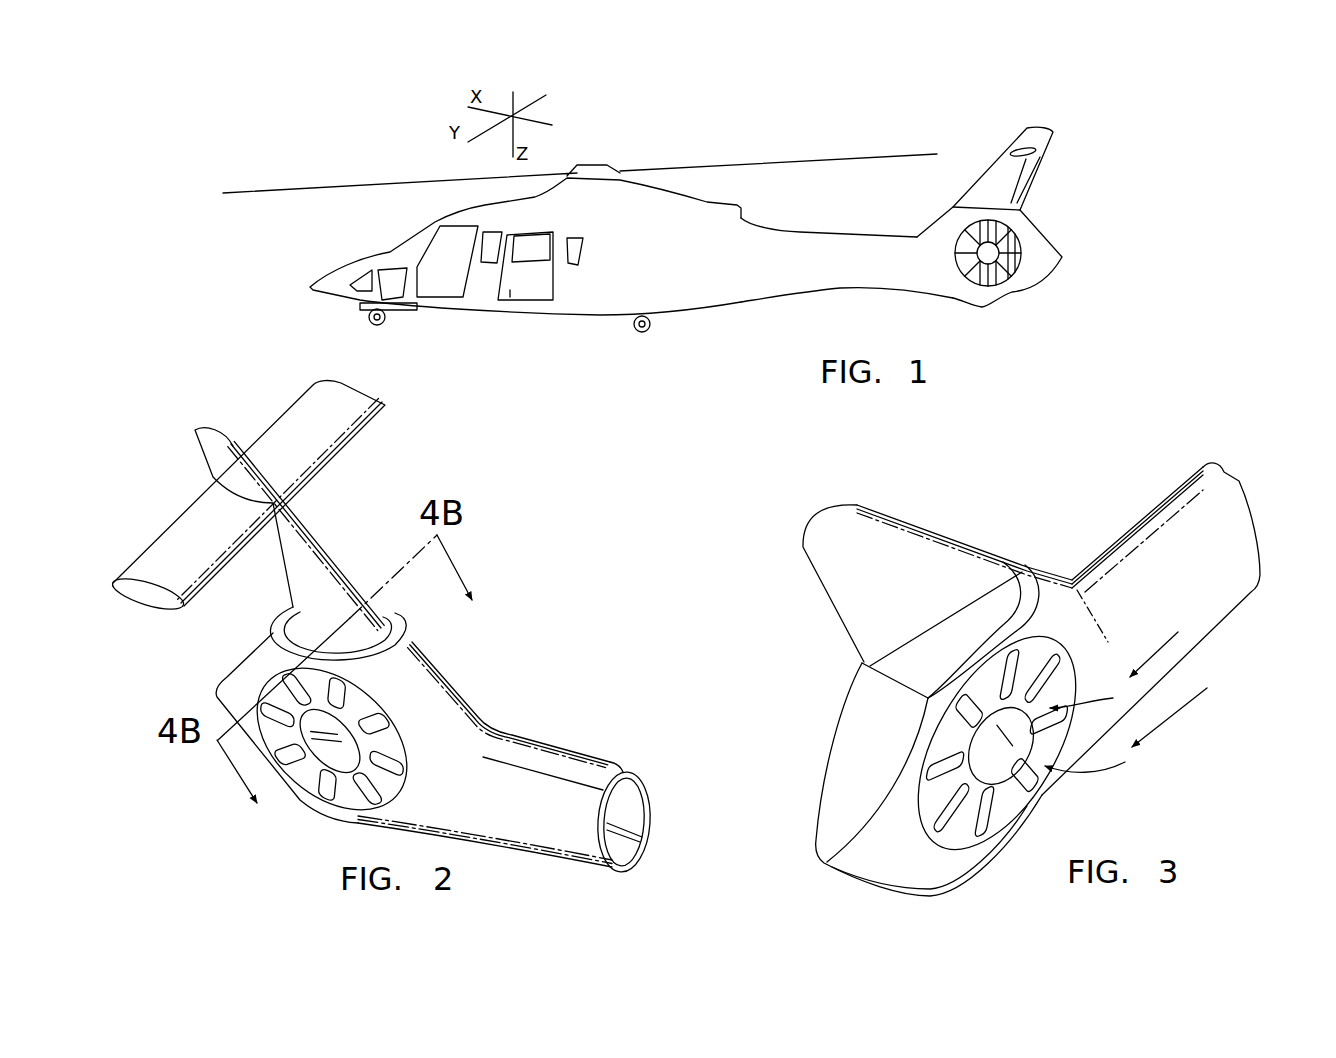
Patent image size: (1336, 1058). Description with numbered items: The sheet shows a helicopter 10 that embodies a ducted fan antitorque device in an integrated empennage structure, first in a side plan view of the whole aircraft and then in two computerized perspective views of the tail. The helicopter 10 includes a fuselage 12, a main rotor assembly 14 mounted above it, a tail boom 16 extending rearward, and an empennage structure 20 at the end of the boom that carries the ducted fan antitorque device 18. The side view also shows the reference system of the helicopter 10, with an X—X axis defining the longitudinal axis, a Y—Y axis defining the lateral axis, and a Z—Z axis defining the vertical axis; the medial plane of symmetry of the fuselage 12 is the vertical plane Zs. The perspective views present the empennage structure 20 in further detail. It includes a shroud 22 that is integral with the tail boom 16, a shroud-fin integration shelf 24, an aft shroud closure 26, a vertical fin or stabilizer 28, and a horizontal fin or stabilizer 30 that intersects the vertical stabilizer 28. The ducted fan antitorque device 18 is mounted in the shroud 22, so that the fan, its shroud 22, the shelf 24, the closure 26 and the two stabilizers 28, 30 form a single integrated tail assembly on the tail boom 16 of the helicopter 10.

In FIG. 1, the helicopter 10 is at (676, 241).
In FIG. 1, the fuselage 12 is at (578, 322).
In FIG. 1, the main rotor assembly 14 is at (624, 157).
In FIG. 1, the tail boom 16 is at (839, 294).
In FIG. 2, the tail boom 16 is at (505, 758).
In FIG. 3, the tail boom 16 is at (1138, 518).
In FIG. 1, the ducted fan antitorque device 18 is at (1009, 286).
In FIG. 2, the ducted fan antitorque device 18 is at (320, 782).
In FIG. 3, the ducted fan antitorque device 18 is at (1013, 790).
In FIG. 1, the empennage structure 20 is at (1023, 235).
In FIG. 2, the empennage structure 20 is at (296, 745).
In FIG. 3, the empennage structure 20 is at (948, 702).
In FIG. 2, the shroud 22 is at (466, 701).
In FIG. 3, the shroud 22 is at (924, 897).
In FIG. 2, the shroud-fin integration shelf 24 is at (285, 627).
In FIG. 3, the shroud-fin integration shelf 24 is at (917, 680).
In FIG. 3, the aft shroud closure 26 is at (843, 738).
In FIG. 2, the vertical fin or stabilizer 28 is at (311, 560).
In FIG. 3, the vertical fin or stabilizer 28 is at (933, 552).
In FIG. 2, the horizontal fin or stabilizer 30 is at (291, 432).